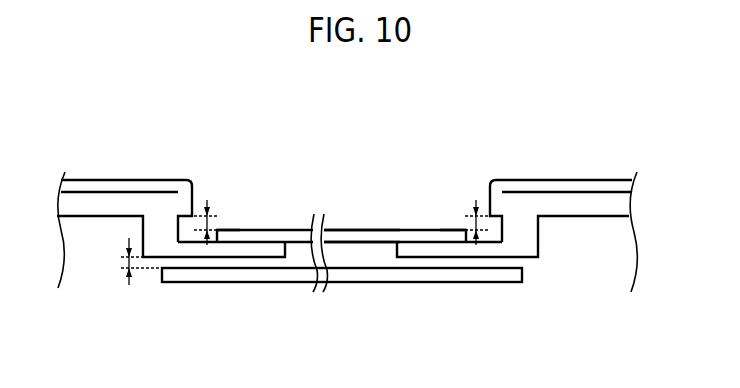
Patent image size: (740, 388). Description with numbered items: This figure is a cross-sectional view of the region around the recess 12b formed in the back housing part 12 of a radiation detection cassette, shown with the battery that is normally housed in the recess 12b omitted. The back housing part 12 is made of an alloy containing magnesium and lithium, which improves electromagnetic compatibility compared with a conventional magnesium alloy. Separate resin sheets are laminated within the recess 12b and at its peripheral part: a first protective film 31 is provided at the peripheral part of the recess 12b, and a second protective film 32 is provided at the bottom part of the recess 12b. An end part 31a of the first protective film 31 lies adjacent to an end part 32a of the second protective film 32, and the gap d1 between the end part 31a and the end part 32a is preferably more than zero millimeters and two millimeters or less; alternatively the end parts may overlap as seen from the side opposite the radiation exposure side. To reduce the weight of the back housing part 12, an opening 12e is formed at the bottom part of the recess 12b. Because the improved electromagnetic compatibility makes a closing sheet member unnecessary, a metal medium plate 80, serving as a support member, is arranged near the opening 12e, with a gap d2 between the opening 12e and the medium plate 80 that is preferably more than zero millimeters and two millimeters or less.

The first protective film 31 is at (113, 185).
The end part of the first protective film 31a is at (190, 205).
The second protective film 32 is at (293, 233).
The end part of the second protective film 32a is at (225, 231).
The back housing part 12 is at (151, 229).
The recess 12b is at (346, 224).
The opening 12e is at (347, 251).
The medium plate 80 is at (255, 283).
The gap d1 is at (208, 203).
The gap d2 is at (130, 283).